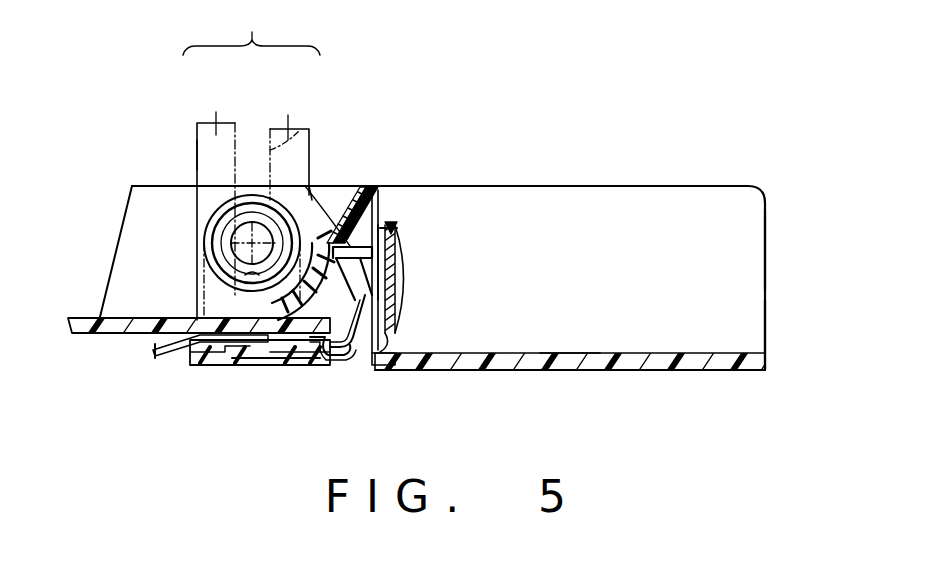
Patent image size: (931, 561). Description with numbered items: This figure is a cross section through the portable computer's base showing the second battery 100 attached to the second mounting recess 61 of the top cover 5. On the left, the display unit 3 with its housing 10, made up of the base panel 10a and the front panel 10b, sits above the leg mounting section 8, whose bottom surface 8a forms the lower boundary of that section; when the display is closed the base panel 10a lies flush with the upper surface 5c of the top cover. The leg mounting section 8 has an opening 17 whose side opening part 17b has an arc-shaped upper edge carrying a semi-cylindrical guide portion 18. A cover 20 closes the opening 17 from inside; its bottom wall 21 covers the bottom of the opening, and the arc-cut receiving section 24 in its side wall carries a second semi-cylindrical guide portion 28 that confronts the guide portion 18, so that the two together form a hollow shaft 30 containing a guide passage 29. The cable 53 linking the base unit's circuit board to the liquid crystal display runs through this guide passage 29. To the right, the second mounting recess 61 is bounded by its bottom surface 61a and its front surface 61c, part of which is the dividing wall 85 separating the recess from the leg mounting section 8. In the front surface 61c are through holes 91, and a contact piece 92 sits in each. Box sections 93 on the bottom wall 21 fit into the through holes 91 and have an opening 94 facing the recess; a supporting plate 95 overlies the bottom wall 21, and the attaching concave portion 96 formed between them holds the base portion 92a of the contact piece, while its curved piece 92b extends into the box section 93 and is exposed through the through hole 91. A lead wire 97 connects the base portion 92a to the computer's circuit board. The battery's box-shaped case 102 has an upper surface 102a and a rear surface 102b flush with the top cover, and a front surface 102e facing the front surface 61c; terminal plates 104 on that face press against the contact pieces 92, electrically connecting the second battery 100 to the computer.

The display unit 3 is at (194, 152).
The top cover 5 is at (362, 186).
The upper surface 5c is at (182, 186).
The leg mounting section 8 is at (134, 257).
The bottom surface 8a is at (120, 318).
The housing 10 is at (250, 163).
The base panel 10a is at (286, 125).
The front panel 10b is at (217, 118).
The opening 17 is at (218, 316).
The side opening part 17b is at (236, 225).
The guide portion 18 is at (142, 186).
The cover 20 is at (318, 244).
The bottom wall 21 is at (283, 360).
The receiving section 24 is at (245, 362).
The guide portion 28 is at (216, 344).
The guide passage 29 is at (230, 264).
The hollow shaft 30 is at (313, 186).
The cable 53 is at (267, 172).
The second mounting recess 61 is at (693, 338).
The bottom surface 61a is at (561, 352).
The front surface 61c is at (376, 210).
The dividing wall 85 is at (399, 217).
The through hole 91 is at (383, 365).
The contact piece 92 is at (349, 352).
The base portion 92a is at (266, 355).
The curved piece 92b is at (395, 300).
The box section 93 is at (396, 250).
The opening 94 is at (388, 330).
The supporting plate 95 is at (312, 370).
The attaching concave portion 96 is at (332, 321).
The lead wire 97 is at (161, 356).
The second battery 100 is at (665, 182).
The case 102 is at (752, 256).
The upper surface 102a is at (514, 184).
The rear surface 102b is at (766, 300).
The front surface 102e is at (393, 231).
The terminal plates 104 is at (400, 265).